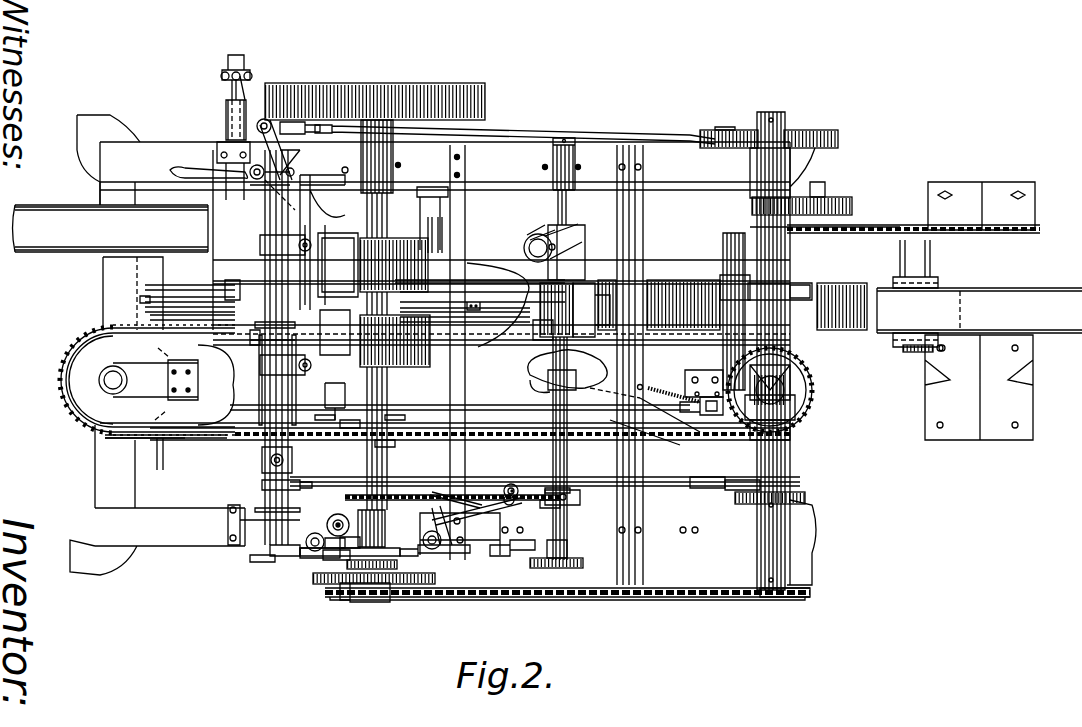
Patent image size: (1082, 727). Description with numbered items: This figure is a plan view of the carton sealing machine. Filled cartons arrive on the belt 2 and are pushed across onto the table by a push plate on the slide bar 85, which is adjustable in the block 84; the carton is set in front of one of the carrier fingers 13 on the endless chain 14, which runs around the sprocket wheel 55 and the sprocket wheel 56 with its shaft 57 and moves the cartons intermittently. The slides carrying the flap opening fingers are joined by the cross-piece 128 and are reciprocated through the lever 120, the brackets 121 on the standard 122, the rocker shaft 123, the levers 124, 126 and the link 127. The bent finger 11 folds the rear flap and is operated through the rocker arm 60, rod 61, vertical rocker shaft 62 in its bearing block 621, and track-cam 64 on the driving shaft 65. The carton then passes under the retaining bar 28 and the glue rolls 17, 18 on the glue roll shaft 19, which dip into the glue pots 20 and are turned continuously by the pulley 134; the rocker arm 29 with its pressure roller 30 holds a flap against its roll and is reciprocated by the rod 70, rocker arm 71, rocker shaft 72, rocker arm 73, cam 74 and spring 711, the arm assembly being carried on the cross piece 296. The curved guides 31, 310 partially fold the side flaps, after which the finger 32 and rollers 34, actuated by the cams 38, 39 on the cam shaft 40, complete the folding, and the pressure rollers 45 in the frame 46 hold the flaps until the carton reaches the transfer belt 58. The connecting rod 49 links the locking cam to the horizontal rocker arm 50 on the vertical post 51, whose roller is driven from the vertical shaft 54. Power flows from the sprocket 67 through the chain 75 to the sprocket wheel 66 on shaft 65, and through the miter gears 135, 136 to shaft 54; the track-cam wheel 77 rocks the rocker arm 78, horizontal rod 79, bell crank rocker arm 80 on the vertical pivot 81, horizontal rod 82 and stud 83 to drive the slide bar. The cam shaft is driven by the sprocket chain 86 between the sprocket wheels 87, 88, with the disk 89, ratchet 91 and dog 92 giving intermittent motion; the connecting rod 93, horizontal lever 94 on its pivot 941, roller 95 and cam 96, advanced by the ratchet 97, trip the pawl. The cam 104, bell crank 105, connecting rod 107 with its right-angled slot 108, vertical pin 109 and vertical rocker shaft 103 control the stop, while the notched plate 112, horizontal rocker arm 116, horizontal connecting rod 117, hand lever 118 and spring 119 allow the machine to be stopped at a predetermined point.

The belt 2 is at (111, 228).
The bent finger 11 is at (140, 300).
The carrier fingers 13 is at (172, 460).
The endless chain 14 is at (230, 438).
The glue roll 17 is at (410, 257).
The glue roll 18 is at (405, 362).
The glue roll shaft 19 is at (380, 455).
The glue pot 20 is at (305, 280).
The horizontal retaining bar 28 is at (435, 303).
The vertical rocker arm 29 is at (338, 405).
The pressure roller 30 is at (385, 390).
The curved guide 31 is at (478, 357).
The finger 32 is at (580, 250).
The laterally extending roller 34 is at (520, 338).
The cam 38 is at (535, 238).
The cam 39 is at (530, 385).
The cam shaft 40 is at (570, 457).
The pressure rollers 45 is at (700, 285).
The frame 46 is at (660, 284).
The connecting rod 49 is at (672, 407).
The horizontal rocker arm 50 is at (778, 436).
The vertical post 51 is at (774, 406).
The vertical shaft 54 is at (800, 392).
The sprocket wheel 55 is at (790, 388).
The sprocket wheel 56 is at (66, 352).
The sprocket 57 is at (113, 384).
The transfer belt 58 is at (1022, 262).
The vertical rocker arm 60 is at (265, 484).
The rod 61 is at (340, 476).
The vertical rocker shaft 62 is at (795, 486).
The track-cam 64 is at (805, 500).
The driving shaft 65 is at (770, 228).
The sprocket wheel 66 is at (812, 600).
The sprocket 67 is at (325, 594).
The rod 70 is at (505, 414).
The vertical rocker arm 71 is at (725, 440).
The horizontal rocker shaft 72 is at (723, 355).
The rocker arm 73 is at (730, 272).
The cam 74 is at (800, 283).
The chain 75 is at (655, 598).
The track-cam wheel 77 is at (832, 128).
The vertical rocker arm 78 is at (724, 128).
The horizontal rod 79 is at (600, 128).
The bell crank rocker arm 80 is at (362, 105).
The vertical pivot 81 is at (298, 163).
The horizontal rod 82 is at (225, 140).
The vertical shaft or stud 83 is at (233, 70).
The block 84 is at (250, 76).
The slide bar 85 is at (245, 65).
The sprocket chain 86 is at (489, 492).
The sprocket wheel 87 is at (573, 512).
The sprocket wheel 88 is at (345, 500).
The disk 89 is at (578, 495).
The ratchet 91 is at (540, 495).
The dog or bell crank lever 92 is at (520, 552).
The connecting rod 93 is at (488, 520).
The horizontal lever 94 is at (375, 529).
The roller 95 is at (455, 575).
The cam 96 is at (420, 585).
The ratchet 97 is at (343, 566).
The vertical rocker shaft 103 is at (262, 510).
The cam 104 is at (583, 568).
The bell crank 105 is at (540, 560).
The connecting rod 107 is at (400, 584).
The right-angled slot 108 is at (262, 556).
The vertical pin 109 is at (245, 552).
The notched plate 112 is at (345, 605).
The horizontal rocker arm 116 is at (300, 505).
The horizontal connecting rod 117 is at (290, 390).
The hand lever 118 is at (175, 168).
The spring 119 is at (362, 522).
The lever 120 is at (262, 348).
The brackets 121 is at (292, 347).
The standard 122 is at (220, 400).
The rocker shaft 123 is at (394, 265).
The lever 124 is at (255, 342).
The lever 126 is at (325, 330).
The link 127 is at (228, 300).
The cross-piece 128 is at (226, 292).
The pulley 134 is at (372, 95).
The miter gear 135 is at (795, 372).
The miter gear 136 is at (800, 385).
The cross piece 296 is at (395, 470).
The curved guide 310 is at (505, 273).
The bearing block 621 is at (690, 486).
The spring 711 is at (665, 388).
The pivot 941 is at (450, 565).